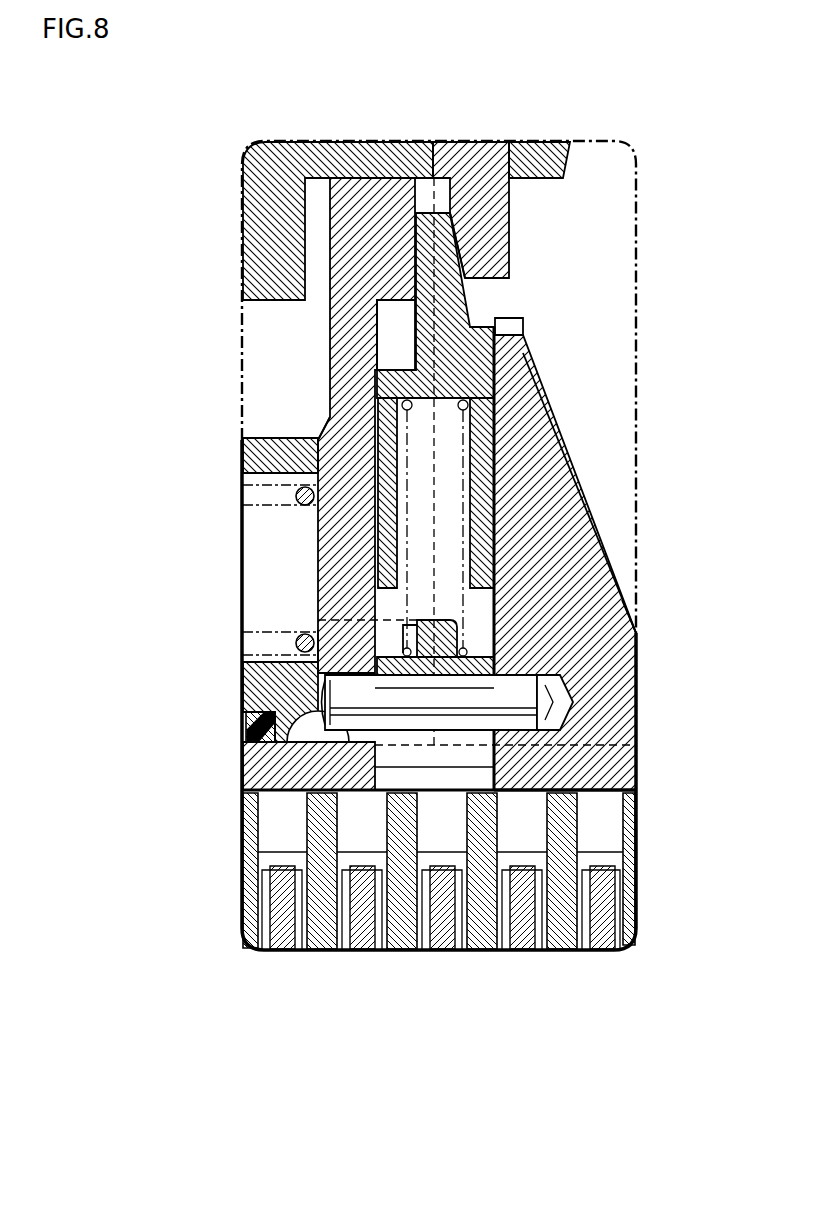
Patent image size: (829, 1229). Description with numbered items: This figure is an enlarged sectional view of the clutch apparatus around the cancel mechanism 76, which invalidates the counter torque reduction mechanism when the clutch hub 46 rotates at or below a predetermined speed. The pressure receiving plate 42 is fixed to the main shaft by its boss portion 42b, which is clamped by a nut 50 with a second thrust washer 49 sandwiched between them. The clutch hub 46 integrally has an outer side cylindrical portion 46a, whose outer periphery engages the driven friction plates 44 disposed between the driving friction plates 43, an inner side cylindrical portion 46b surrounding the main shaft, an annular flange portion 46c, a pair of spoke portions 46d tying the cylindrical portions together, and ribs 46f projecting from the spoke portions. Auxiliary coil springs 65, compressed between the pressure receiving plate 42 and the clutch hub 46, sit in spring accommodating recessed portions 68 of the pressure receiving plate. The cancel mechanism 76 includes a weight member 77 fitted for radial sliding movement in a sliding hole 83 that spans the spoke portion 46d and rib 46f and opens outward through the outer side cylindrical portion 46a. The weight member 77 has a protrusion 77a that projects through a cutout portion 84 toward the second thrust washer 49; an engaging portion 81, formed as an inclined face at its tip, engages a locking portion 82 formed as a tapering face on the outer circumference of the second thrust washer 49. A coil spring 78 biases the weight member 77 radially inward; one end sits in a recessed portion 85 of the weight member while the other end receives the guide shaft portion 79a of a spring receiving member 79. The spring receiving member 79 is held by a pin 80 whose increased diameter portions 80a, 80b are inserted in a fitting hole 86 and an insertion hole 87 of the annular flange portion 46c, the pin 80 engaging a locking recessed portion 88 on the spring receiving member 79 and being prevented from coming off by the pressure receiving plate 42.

The pressure receiving plate 42 is at (244, 680).
The boss portion 42b is at (405, 174).
The driving friction plates 43 is at (417, 927).
The driven friction plates 44 is at (557, 927).
The clutch hub 46 is at (320, 342).
The outer side cylindrical portion 46a is at (597, 866).
The inner side cylindrical portion 46b is at (385, 197).
The annular flange portion 46c is at (343, 643).
The spoke portions 46d is at (340, 435).
The ribs 46f is at (573, 520).
The second thrust washer 49 is at (487, 192).
The nut 50 is at (563, 165).
The auxiliary coil springs 65 is at (302, 637).
The spring accommodating recessed portions 68 is at (273, 474).
The cancel mechanism 76 is at (495, 372).
The weight member 77 is at (522, 348).
The protrusion 77a is at (400, 327).
The coil spring 78 is at (470, 406).
The spring receiving member 79 is at (463, 790).
The guide shaft portion 79a is at (403, 632).
The pin 80 is at (421, 700).
The increased diameter portion 80a is at (362, 703).
The increased diameter portion 80b is at (573, 713).
The engaging portion 81 is at (462, 243).
The locking portion 82 is at (428, 242).
The sliding hole 83 is at (478, 463).
The cutout portion 84 is at (505, 330).
The recessed portion 85 is at (453, 505).
The fitting hole 86 is at (263, 713).
The insertion hole 87 is at (637, 643).
The locking recessed portion 88 is at (512, 790).